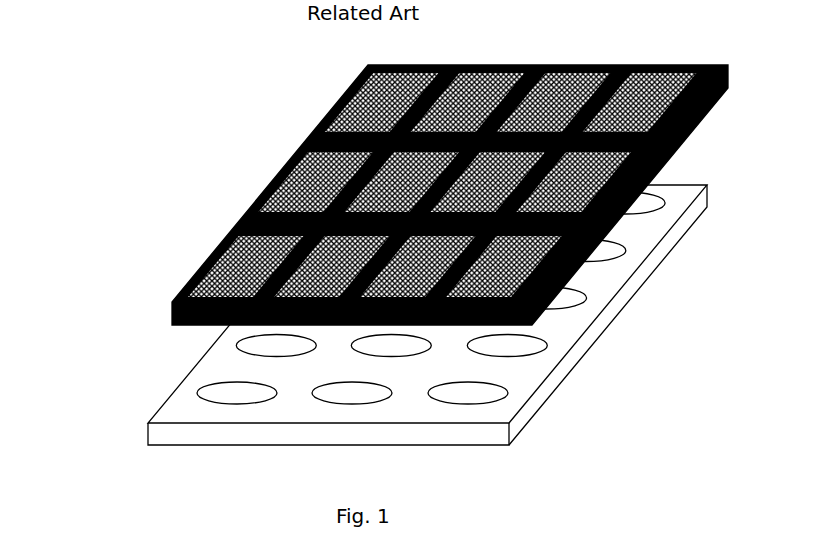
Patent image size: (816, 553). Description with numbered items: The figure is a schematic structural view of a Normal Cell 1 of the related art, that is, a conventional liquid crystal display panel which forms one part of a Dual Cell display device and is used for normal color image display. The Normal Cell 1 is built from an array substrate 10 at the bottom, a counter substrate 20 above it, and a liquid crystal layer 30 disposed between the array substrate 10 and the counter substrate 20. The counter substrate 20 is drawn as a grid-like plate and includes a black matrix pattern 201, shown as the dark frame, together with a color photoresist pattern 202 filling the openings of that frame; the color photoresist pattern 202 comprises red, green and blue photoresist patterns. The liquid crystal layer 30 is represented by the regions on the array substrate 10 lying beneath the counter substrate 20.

The Normal Cell 1 is at (55, 83).
The array substrate 10 is at (178, 437).
The counter substrate 20 is at (92, 231).
The black matrix pattern 201 is at (172, 300).
The color photoresist pattern 202 is at (255, 258).
The liquid crystal layer 30 is at (222, 393).